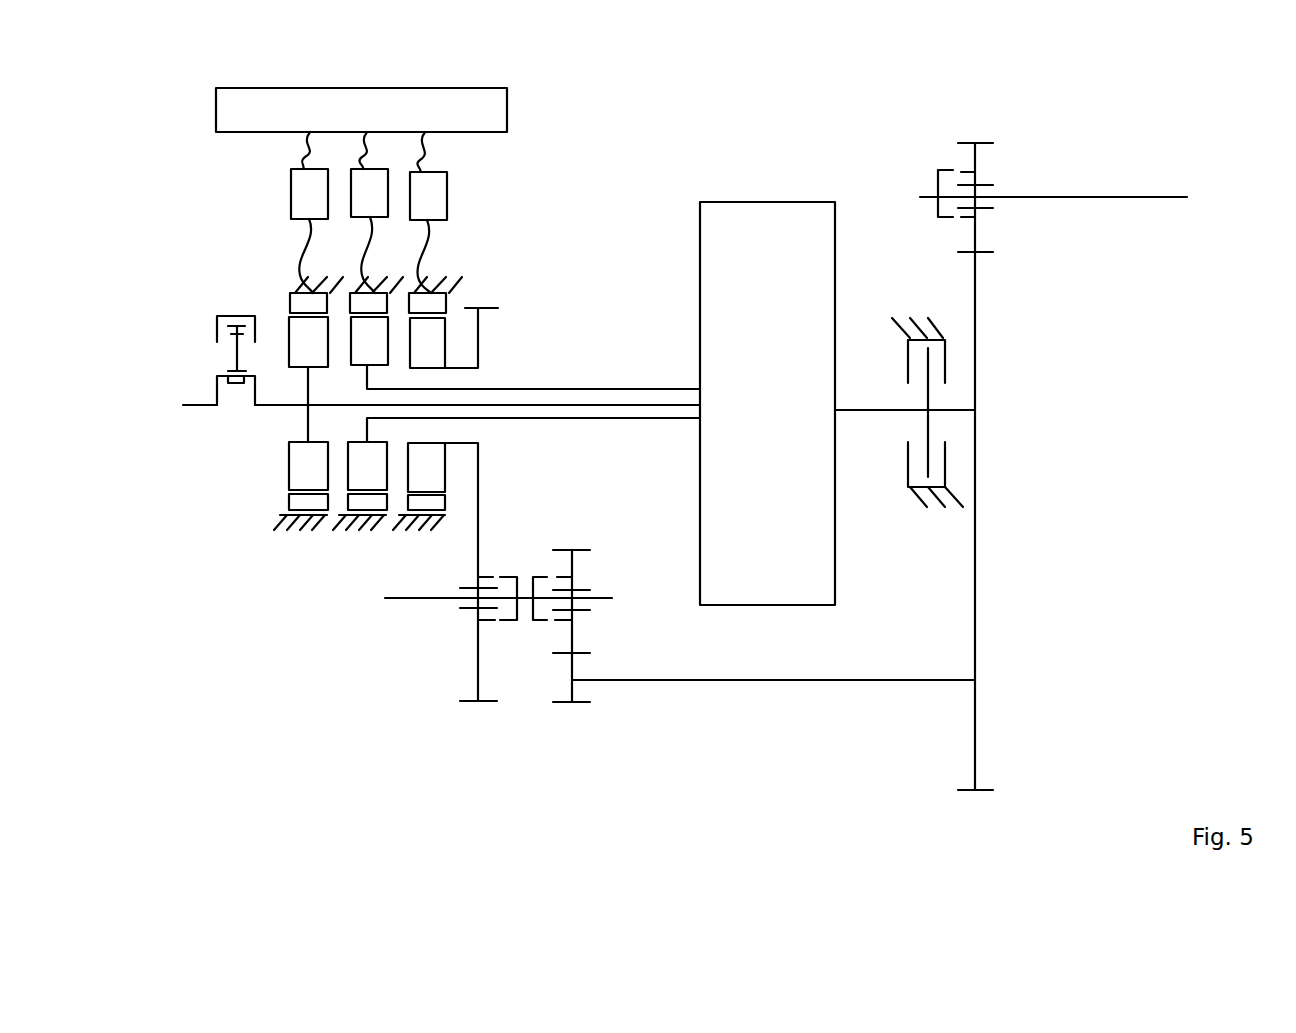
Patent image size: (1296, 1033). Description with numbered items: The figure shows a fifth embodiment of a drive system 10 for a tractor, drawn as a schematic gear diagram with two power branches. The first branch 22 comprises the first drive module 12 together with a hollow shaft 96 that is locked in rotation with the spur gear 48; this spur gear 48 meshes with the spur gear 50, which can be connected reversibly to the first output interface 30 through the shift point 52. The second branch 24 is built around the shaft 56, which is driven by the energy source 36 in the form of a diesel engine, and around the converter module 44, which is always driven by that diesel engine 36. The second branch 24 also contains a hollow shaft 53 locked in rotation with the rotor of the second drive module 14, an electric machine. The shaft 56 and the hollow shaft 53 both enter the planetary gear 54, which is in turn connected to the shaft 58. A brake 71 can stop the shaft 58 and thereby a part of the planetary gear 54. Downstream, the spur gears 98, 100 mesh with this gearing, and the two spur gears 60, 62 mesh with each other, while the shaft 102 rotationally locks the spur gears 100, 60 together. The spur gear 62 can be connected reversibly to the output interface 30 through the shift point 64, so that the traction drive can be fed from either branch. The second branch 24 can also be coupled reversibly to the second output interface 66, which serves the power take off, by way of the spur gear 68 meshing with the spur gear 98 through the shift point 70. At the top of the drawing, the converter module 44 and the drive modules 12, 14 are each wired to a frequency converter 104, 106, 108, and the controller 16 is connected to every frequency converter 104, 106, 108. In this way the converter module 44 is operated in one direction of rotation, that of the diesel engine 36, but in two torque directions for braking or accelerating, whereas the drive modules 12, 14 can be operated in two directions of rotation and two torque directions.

The drive system 10 is at (647, 177).
The first drive module 12 is at (423, 470).
The second drive module 14 is at (363, 472).
The controller 16 is at (266, 103).
The first branch 22 is at (458, 357).
The second branch 24 is at (512, 385).
The first output interface 30 is at (602, 597).
The energy source 36 is at (220, 352).
The converter module 44 is at (303, 470).
The spur gear 48 is at (480, 460).
The spur gear 50 is at (478, 657).
The shift point 52 is at (505, 623).
The hollow shaft 53 is at (647, 390).
The planetary gear 54 is at (778, 391).
The shaft 56 is at (553, 407).
The shaft 58 is at (870, 412).
The spur gear 60 is at (570, 693).
The spur gear 62 is at (570, 643).
The shift point 64 is at (543, 577).
The second output interface 66 is at (1130, 198).
The spur gear 68 is at (980, 158).
The shift point 70 is at (938, 170).
The brake 71 is at (905, 362).
The hollow shaft 96 is at (462, 445).
The spur gear 98 is at (980, 330).
The spur gear 100 is at (975, 657).
The shaft 102 is at (725, 680).
The frequency converter 104 is at (302, 200).
The frequency converter 106 is at (437, 200).
The frequency converter 108 is at (377, 190).